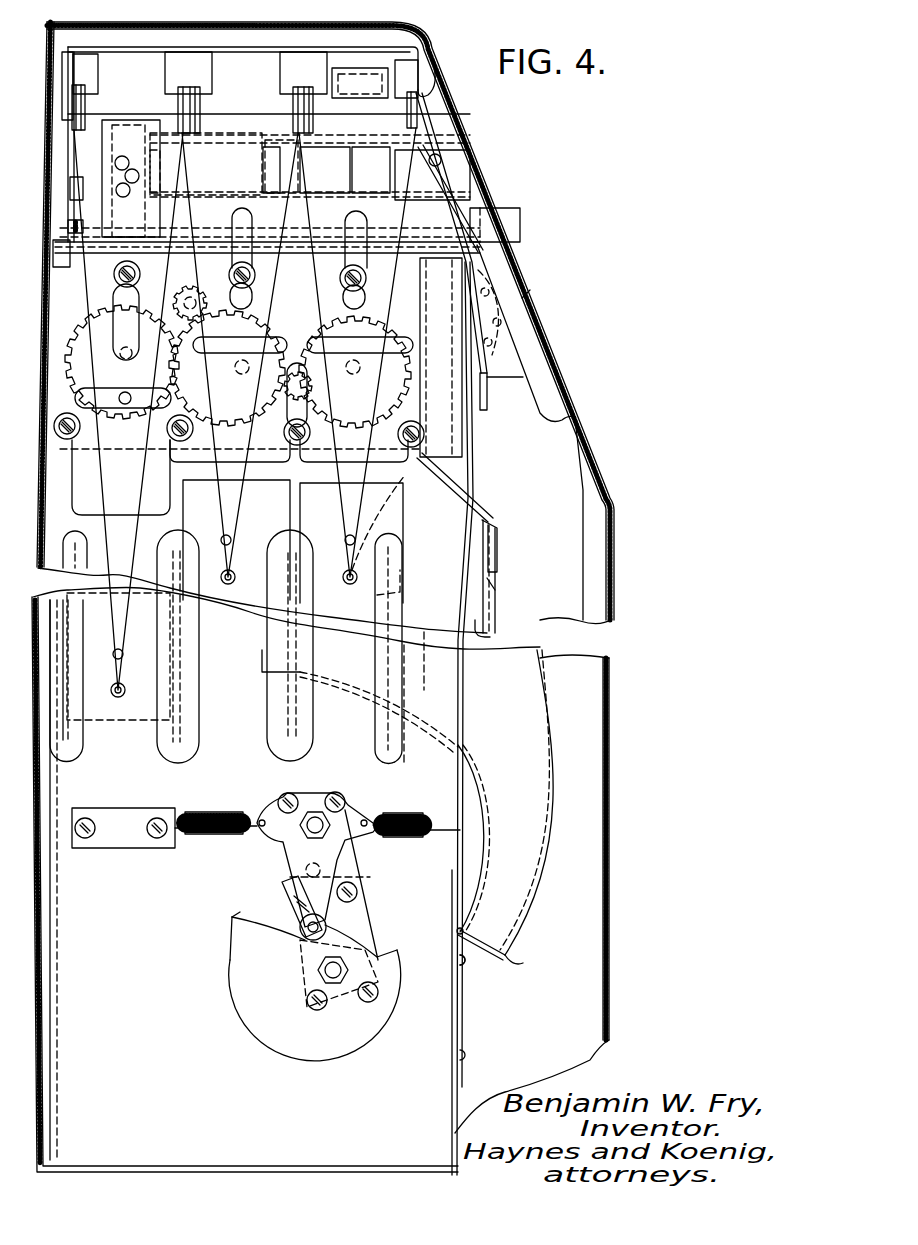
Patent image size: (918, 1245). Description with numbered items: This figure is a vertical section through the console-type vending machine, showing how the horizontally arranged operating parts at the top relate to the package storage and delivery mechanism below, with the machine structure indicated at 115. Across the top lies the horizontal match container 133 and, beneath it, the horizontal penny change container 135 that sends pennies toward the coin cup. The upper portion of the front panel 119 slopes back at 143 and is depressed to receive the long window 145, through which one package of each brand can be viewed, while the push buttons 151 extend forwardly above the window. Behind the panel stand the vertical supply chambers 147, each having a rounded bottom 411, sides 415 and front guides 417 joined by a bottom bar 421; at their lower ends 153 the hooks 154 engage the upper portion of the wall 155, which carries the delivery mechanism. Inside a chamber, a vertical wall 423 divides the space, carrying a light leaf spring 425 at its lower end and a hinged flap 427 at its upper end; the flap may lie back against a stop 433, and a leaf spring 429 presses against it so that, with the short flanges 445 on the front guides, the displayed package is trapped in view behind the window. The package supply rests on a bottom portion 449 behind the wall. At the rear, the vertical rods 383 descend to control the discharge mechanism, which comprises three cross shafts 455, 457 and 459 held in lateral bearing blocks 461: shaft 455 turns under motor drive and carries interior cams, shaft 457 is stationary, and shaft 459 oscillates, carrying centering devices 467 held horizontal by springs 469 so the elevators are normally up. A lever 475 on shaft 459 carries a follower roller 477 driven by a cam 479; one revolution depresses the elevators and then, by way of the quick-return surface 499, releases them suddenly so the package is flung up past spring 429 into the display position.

The base plate 115 is at (42, 900).
The front panel 119 is at (610, 803).
The match container 133 is at (425, 90).
The penny change container 135 is at (440, 160).
The sloping portion of front panel 143 is at (530, 300).
The window 145 is at (548, 348).
The supply chamber 147 is at (505, 590).
The push button 151 is at (522, 218).
The lower end of supply chamber 153 is at (473, 890).
The hook 154 is at (460, 928).
The wall 155 is at (464, 978).
The vertical rod 383 is at (88, 218).
The rounded bottom 411 is at (463, 780).
The side 415 is at (492, 636).
The front guide 417 is at (496, 605).
The bottom bar 421 is at (497, 963).
The vertical wall 423 is at (375, 587).
The leaf spring 425 is at (426, 660).
The flap 427 is at (443, 300).
The leaf spring 429 is at (487, 523).
The stop 433 is at (378, 522).
The flange 445 is at (485, 390).
The bottom portion 449 is at (310, 665).
The cross shaft 455 is at (315, 970).
The cross shaft 457 is at (358, 892).
The cross shaft 459 is at (290, 840).
The bearing block 461 is at (350, 867).
The centering device 467 is at (340, 812).
The spring 469 is at (212, 815).
The lever 475 is at (290, 880).
The follower roller 477 is at (330, 928).
The cam 479 is at (260, 1050).
The quick-return surface 499 is at (250, 905).